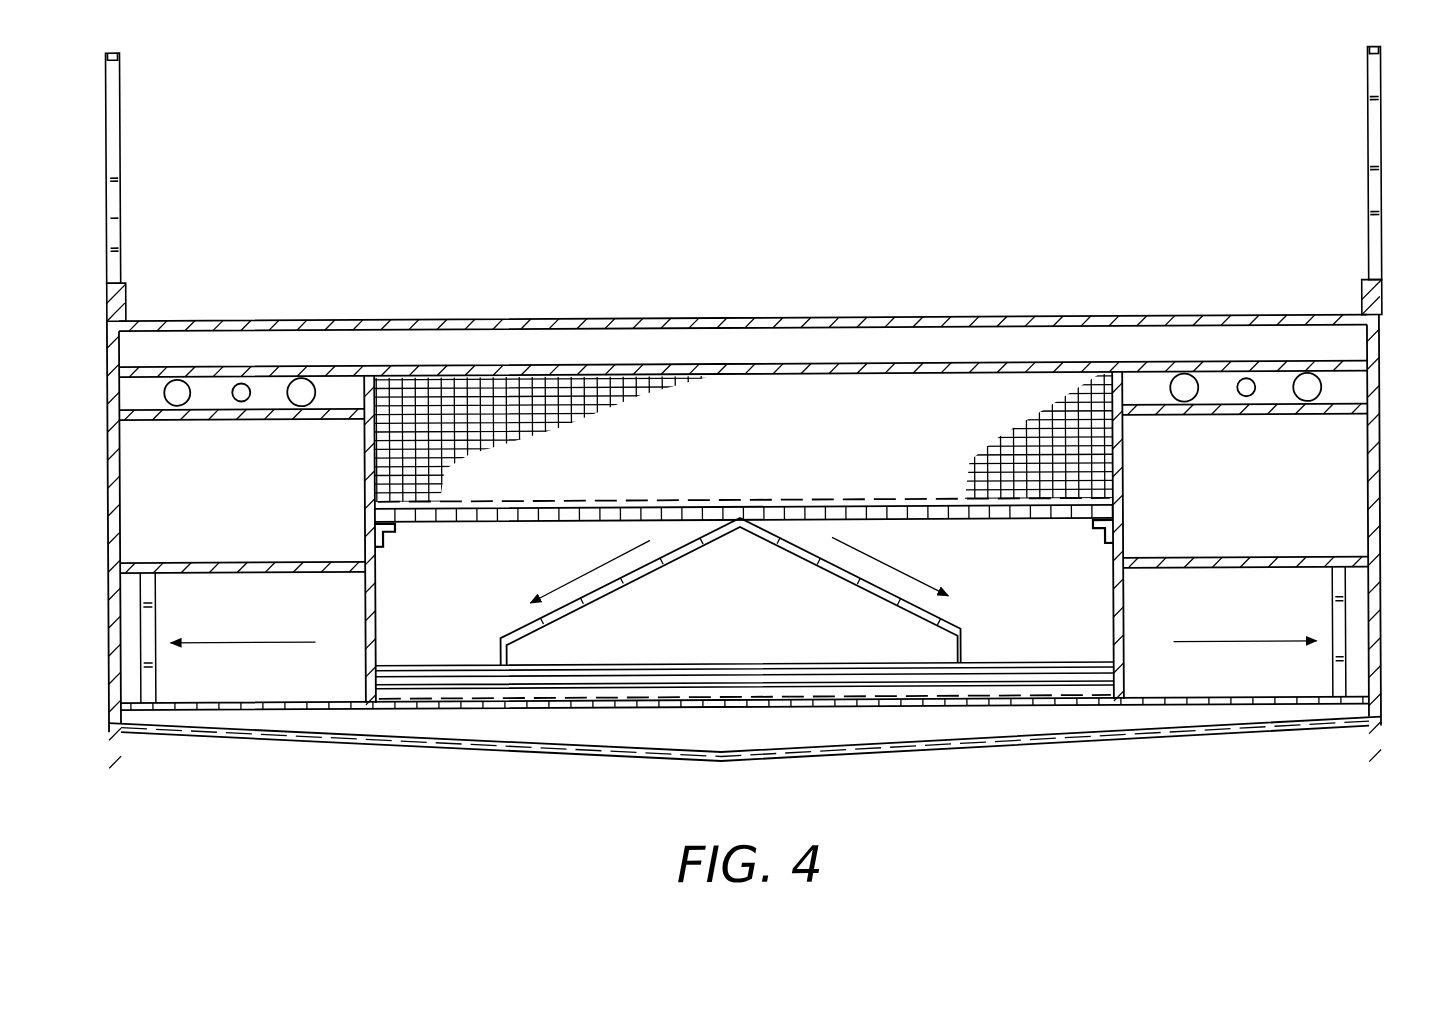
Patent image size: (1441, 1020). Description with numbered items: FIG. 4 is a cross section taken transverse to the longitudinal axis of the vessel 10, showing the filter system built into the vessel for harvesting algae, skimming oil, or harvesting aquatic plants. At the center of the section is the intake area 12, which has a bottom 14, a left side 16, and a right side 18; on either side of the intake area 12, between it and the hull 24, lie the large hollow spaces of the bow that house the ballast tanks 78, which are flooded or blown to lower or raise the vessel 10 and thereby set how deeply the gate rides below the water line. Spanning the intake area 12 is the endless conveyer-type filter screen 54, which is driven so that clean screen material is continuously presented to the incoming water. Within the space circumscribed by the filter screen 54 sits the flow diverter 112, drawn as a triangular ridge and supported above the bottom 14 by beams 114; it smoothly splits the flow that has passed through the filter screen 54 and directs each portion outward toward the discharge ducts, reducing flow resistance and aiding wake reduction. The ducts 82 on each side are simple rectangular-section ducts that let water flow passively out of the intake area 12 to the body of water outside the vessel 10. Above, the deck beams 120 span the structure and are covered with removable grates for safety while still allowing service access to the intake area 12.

The vessel 10 is at (773, 407).
The intake area 12 is at (1026, 632).
The bottom 14 is at (595, 700).
The left side 16 is at (1116, 615).
The right side 18 is at (372, 606).
The hull 24 is at (1382, 467).
The filter screen 54 is at (1070, 495).
The ballast tanks 78 is at (128, 490).
The ducts 82 is at (180, 701).
The flow diverter 112 is at (968, 628).
The beams 114 is at (452, 676).
The deck beams 120 is at (290, 343).